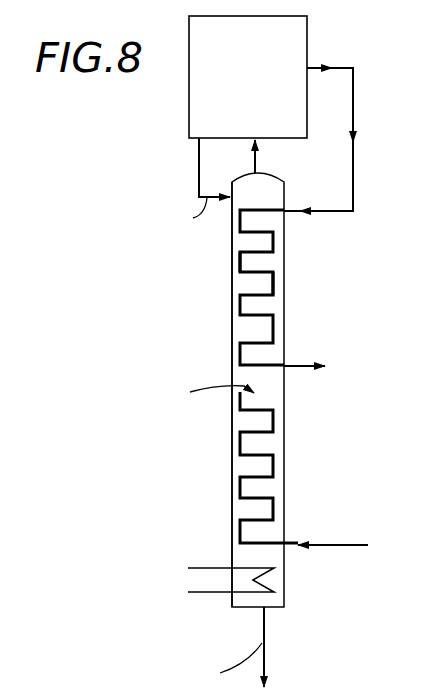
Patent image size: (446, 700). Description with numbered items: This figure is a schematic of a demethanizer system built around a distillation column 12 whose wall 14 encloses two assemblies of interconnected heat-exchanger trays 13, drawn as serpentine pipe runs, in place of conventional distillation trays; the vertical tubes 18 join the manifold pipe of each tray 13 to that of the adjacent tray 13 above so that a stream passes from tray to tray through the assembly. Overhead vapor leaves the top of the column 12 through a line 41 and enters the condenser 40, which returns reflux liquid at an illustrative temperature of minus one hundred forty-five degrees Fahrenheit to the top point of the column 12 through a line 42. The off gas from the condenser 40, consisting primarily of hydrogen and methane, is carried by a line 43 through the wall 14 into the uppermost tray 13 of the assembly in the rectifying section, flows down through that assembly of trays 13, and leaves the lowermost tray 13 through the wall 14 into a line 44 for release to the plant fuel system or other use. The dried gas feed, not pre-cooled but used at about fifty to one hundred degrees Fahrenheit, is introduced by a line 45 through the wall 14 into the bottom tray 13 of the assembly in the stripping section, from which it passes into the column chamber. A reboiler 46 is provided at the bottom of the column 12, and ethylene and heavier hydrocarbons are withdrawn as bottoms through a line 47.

The distillation column 12 is at (289, 198).
The heat-exchanger tray 13 is at (266, 265).
The wall 14 is at (232, 308).
The vertical tube 18 is at (240, 262).
The condenser 40 is at (308, 42).
The line 41 is at (255, 163).
The line 42 is at (199, 158).
The line 43 is at (353, 100).
The line 44 is at (298, 364).
The line 45 is at (292, 542).
The reboiler 46 is at (206, 563).
The line 47 is at (267, 629).